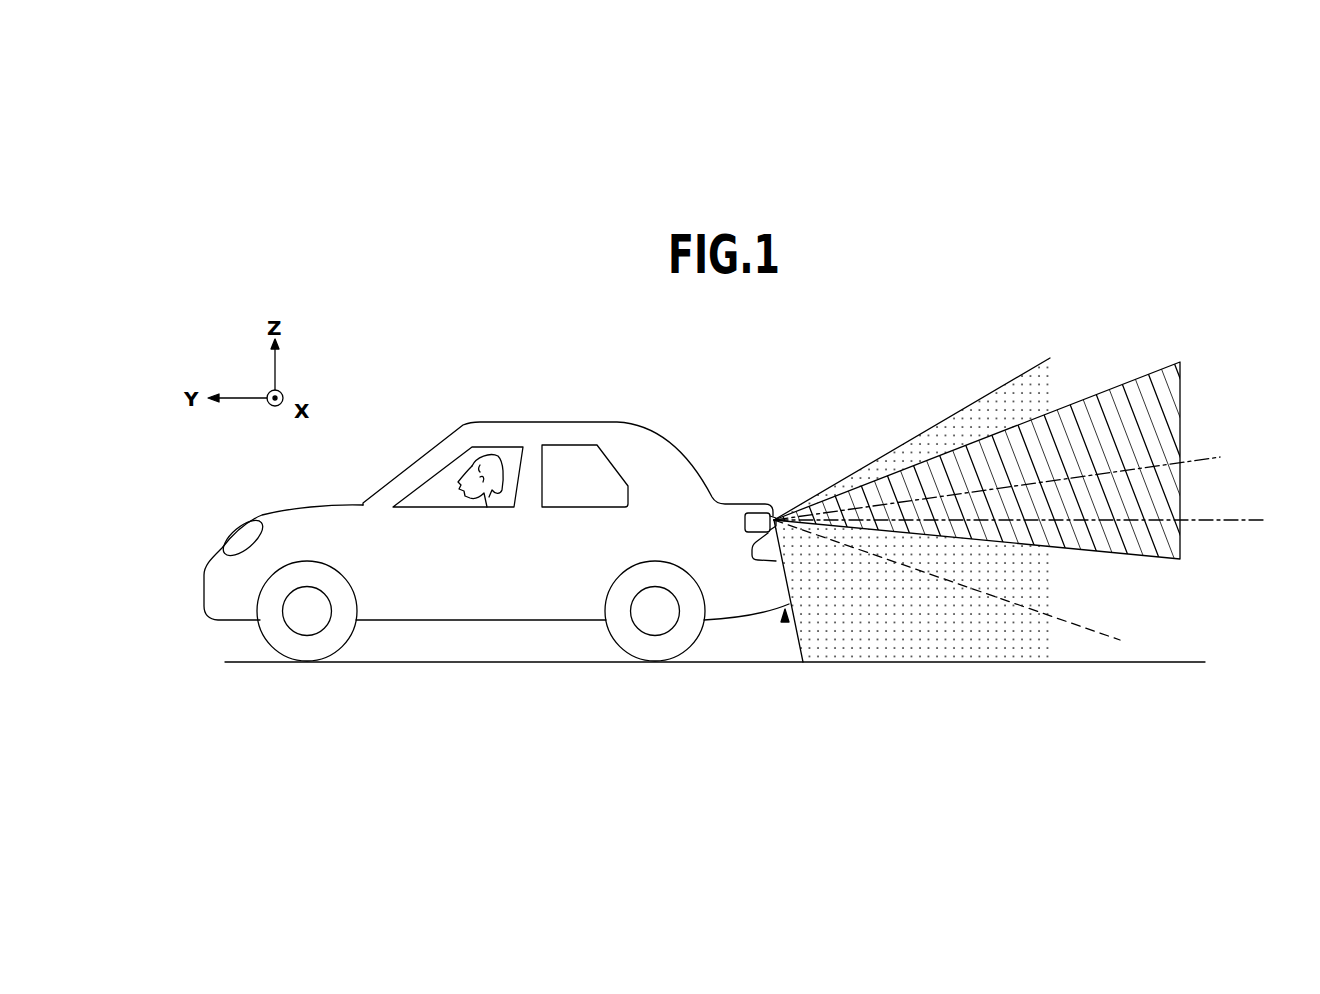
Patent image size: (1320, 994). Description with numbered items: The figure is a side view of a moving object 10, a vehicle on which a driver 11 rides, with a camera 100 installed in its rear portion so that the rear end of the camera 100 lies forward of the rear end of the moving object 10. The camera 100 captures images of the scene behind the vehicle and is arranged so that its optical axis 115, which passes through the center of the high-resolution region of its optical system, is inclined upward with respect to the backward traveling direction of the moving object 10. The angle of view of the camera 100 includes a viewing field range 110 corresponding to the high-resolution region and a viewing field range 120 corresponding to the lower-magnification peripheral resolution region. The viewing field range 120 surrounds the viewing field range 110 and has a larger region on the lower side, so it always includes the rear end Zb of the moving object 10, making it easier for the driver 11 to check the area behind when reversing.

The moving object 10 is at (563, 422).
The driver 11 is at (475, 466).
The camera 100 is at (748, 512).
The viewing field range 110 is at (1146, 400).
The optical axis 115 is at (1210, 457).
The viewing field range 120 is at (992, 414).
The rear end Zb is at (785, 622).